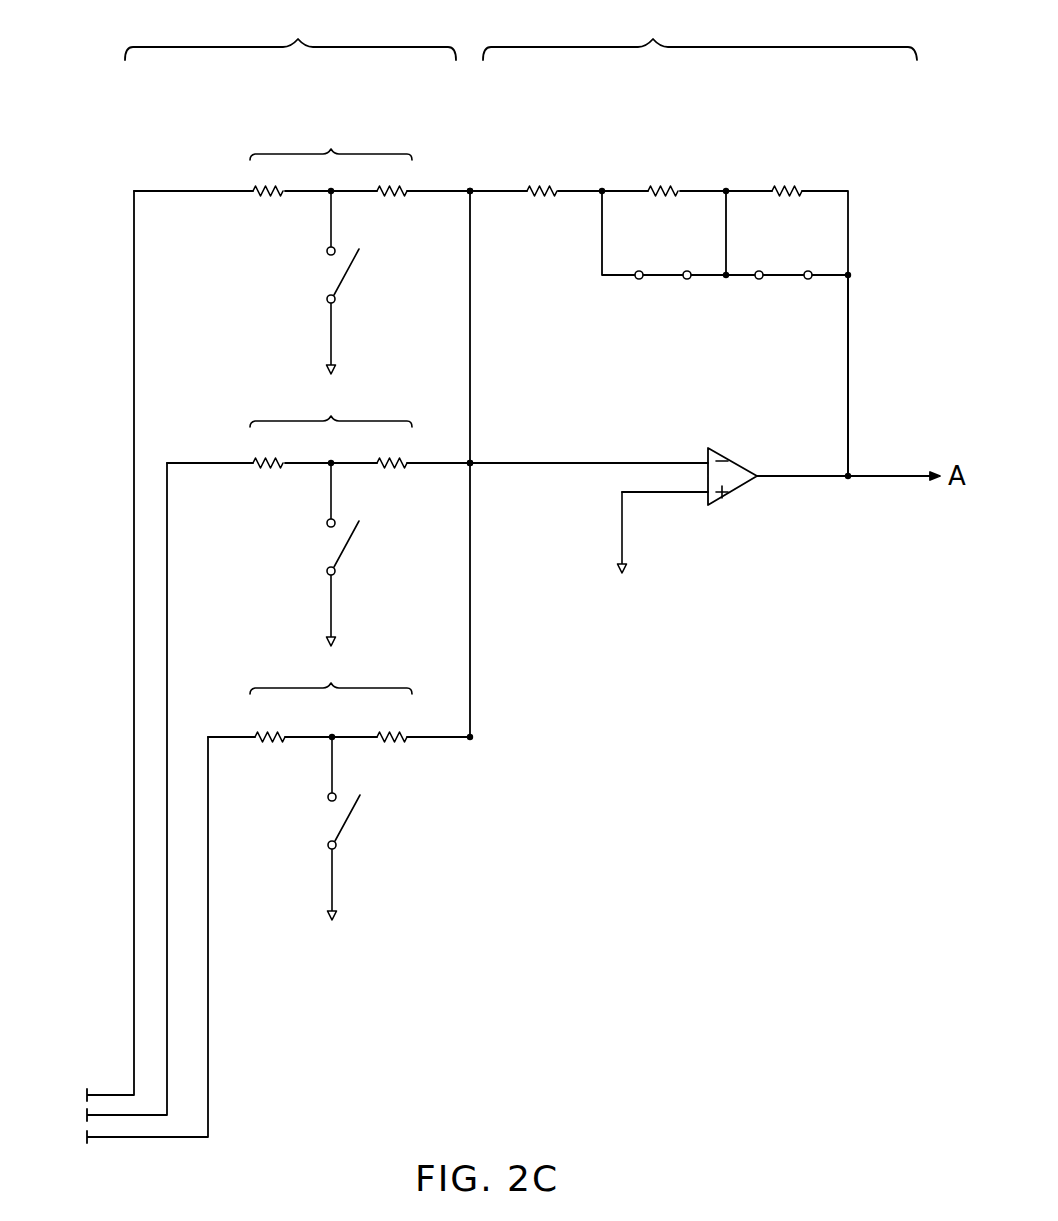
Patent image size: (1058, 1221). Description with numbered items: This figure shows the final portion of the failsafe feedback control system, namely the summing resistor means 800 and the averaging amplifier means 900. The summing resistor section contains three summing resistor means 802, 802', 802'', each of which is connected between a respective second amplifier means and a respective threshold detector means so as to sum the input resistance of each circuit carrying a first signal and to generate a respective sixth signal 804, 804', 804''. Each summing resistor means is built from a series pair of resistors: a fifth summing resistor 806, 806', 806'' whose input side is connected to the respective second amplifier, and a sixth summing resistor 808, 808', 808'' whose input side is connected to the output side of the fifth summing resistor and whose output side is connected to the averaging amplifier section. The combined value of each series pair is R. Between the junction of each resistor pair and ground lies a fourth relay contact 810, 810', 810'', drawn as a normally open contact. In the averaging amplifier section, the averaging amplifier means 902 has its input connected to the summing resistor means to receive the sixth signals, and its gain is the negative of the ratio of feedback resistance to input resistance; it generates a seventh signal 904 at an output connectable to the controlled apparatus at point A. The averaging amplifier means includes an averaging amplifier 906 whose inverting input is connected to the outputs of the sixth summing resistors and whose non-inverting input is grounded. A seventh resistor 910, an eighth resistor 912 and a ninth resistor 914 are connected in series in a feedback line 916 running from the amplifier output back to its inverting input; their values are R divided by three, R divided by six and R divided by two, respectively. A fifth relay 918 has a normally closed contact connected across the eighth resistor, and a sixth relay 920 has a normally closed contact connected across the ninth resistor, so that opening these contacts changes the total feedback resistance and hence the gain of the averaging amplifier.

The summing resistor means 800 is at (290, 35).
The averaging amplifier means 900 is at (700, 35).
The summing resistor means 802 is at (304, 115).
The summing resistor means 802' is at (304, 371).
The summing resistor means 802'' is at (303, 644).
The sixth signal 804 is at (449, 163).
The sixth signal 804' is at (446, 430).
The sixth signal 804'' is at (441, 703).
The fifth summing resistor 806 is at (230, 213).
The fifth summing resistor 806' is at (234, 487).
The fifth summing resistor 806'' is at (256, 768).
The sixth summing resistor 808 is at (416, 213).
The sixth summing resistor 808' is at (420, 487).
The sixth summing resistor 808'' is at (431, 768).
The fourth relay contact 810 is at (303, 282).
The fourth relay contact 810' is at (302, 554).
The fourth relay contact 810'' is at (312, 828).
The averaging amplifier means 902 is at (873, 157).
The seventh signal 904 is at (893, 476).
The averaging amplifier 906 is at (727, 500).
The seventh resistor 910 is at (550, 197).
The eighth resistor 912 is at (676, 195).
The ninth resistor 914 is at (799, 195).
The feedback line 916 is at (848, 383).
The fifth relay 918 is at (639, 279).
The sixth relay 920 is at (807, 279).